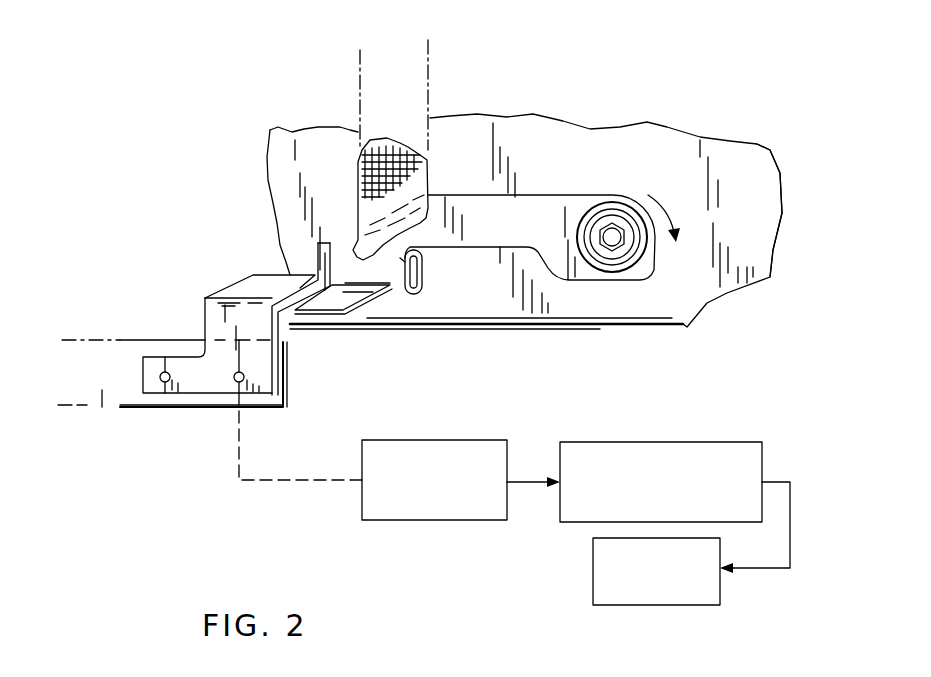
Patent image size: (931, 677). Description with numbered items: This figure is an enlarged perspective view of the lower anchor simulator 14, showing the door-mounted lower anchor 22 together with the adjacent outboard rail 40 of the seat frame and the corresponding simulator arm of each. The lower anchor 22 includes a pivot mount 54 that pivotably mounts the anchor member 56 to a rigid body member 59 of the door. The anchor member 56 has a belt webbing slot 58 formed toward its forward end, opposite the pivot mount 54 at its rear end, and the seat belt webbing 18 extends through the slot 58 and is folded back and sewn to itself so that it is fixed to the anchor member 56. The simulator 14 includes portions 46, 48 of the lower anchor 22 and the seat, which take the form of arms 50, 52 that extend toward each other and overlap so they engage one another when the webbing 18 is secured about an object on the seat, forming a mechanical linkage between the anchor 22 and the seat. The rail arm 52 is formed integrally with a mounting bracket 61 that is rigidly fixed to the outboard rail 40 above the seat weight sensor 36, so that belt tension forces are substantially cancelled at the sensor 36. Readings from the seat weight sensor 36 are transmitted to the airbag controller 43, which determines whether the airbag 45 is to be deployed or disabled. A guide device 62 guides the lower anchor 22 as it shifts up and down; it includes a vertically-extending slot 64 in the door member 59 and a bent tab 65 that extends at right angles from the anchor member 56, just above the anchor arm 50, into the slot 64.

The lower anchor simulator 14 is at (195, 210).
The seat belt webbing 18 is at (413, 92).
The lower anchor 22 is at (560, 165).
The seat weight sensor 36 is at (393, 520).
The outboard rail 40 is at (102, 407).
The airbag controller 43 is at (762, 462).
The airbag 45 is at (623, 605).
The portion of the lower anchor 46 is at (375, 350).
The portion of the seat 48 is at (175, 287).
The anchor arm 50 is at (322, 290).
The rail arm 52 is at (243, 293).
The pivot mount 54 is at (608, 247).
The anchor member 56 is at (480, 217).
The belt webbing slot 58 is at (350, 252).
The rigid body member of the door 59 is at (752, 172).
The mounting bracket 61 is at (208, 328).
The guide device 62 is at (436, 305).
The vertically-extending slot 64 is at (423, 272).
The bent tab 65 is at (404, 293).